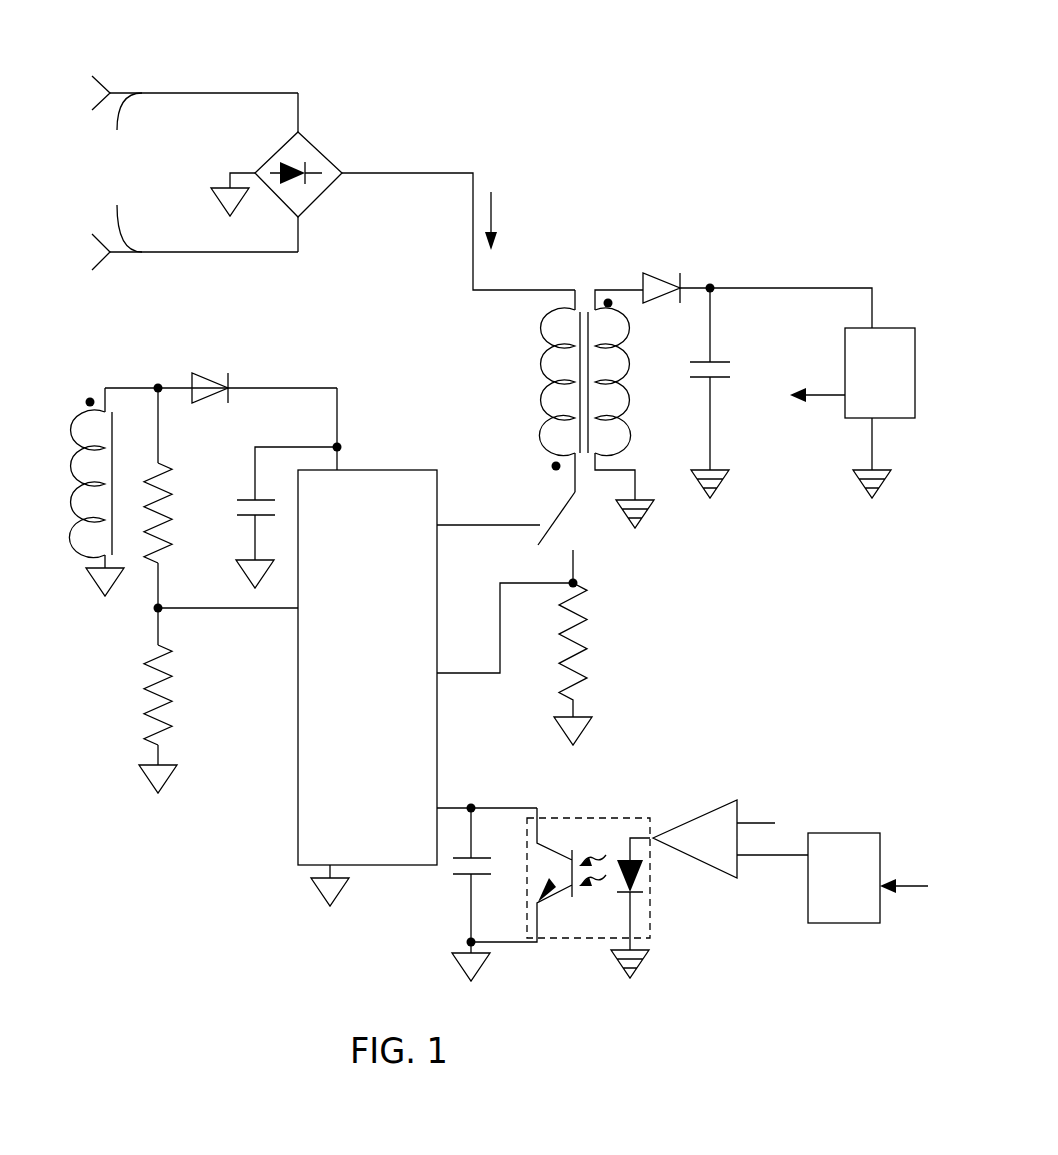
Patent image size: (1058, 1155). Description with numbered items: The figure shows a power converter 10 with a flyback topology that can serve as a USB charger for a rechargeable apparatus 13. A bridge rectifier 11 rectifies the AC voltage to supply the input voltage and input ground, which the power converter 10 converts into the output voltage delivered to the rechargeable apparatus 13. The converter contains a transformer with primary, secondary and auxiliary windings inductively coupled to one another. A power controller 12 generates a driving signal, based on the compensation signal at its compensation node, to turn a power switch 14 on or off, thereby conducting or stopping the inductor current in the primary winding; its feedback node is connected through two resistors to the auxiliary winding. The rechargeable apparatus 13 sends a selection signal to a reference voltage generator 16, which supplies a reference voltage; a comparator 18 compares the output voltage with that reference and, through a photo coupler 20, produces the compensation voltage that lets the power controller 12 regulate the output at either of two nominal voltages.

The power converter 10 is at (479, 72).
The bridge rectifier 11 is at (310, 140).
The power controller 12 is at (384, 640).
The rechargeable apparatus 13 is at (882, 379).
The power switch 14 is at (578, 523).
The reference voltage generator 16 is at (857, 881).
The comparator 18 is at (717, 806).
The photo coupler 20 is at (590, 820).